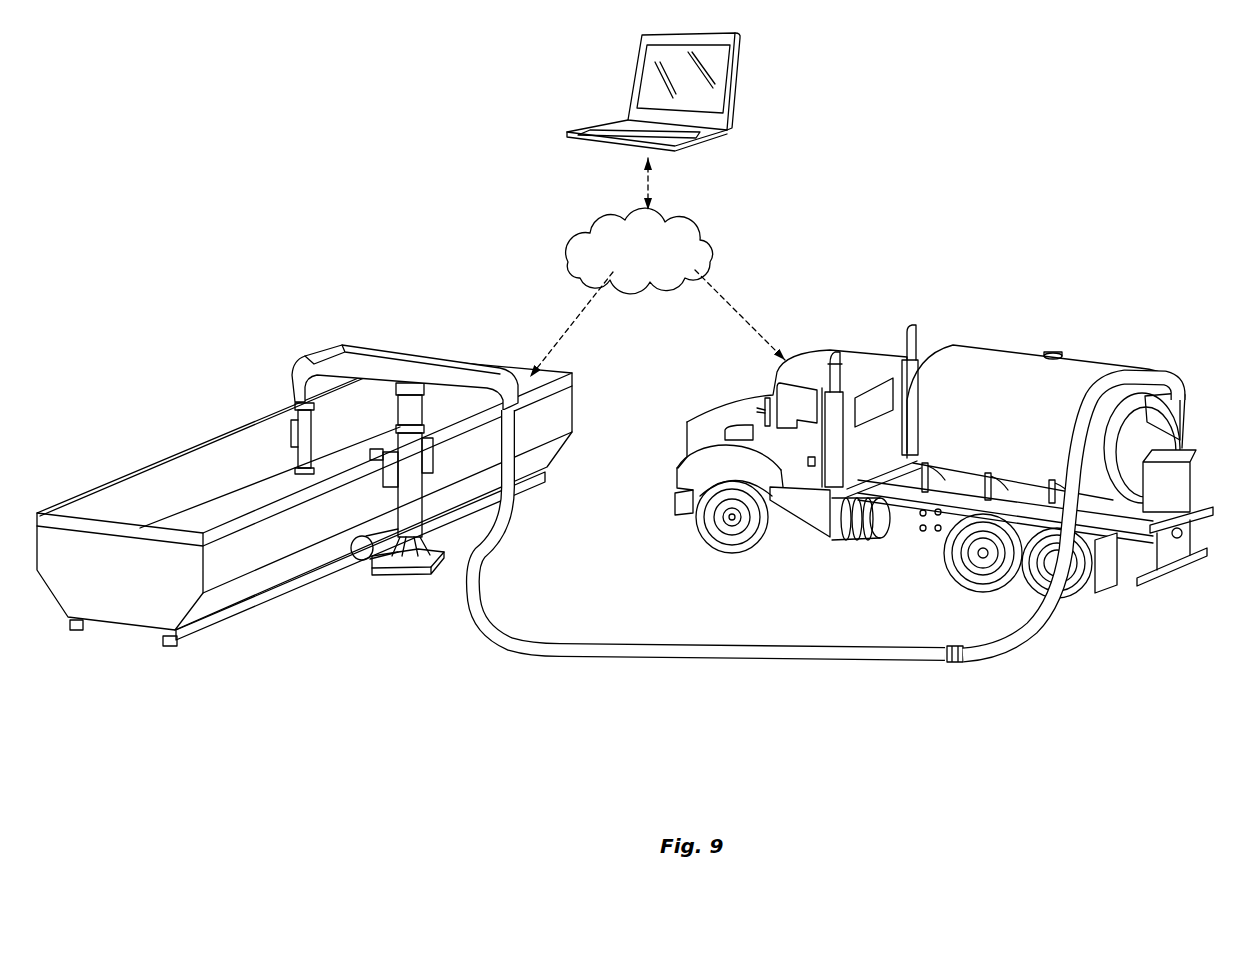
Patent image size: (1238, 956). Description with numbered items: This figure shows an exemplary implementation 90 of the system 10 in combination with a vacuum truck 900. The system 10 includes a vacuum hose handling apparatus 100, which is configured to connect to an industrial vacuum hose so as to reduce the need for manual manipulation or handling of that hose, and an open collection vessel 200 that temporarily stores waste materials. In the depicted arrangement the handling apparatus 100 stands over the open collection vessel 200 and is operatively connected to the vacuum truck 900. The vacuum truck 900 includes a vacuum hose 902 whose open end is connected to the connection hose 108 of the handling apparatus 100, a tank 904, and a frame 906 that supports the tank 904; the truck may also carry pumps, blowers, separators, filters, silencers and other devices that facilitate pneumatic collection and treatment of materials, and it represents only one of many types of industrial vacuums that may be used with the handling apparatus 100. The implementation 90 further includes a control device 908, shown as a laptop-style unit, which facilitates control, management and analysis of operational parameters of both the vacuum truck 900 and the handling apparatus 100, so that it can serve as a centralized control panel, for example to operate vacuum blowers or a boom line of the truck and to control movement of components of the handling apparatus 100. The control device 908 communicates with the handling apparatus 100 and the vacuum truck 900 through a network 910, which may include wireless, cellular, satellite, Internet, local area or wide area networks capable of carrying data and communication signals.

The system 10 is at (256, 293).
The implementation 90 is at (487, 220).
The vacuum hose handling apparatus 100 is at (462, 357).
The connection hose 108 is at (723, 652).
The open collection vessel 200 is at (127, 465).
The vacuum truck 900 is at (1082, 317).
The vacuum hose 902 is at (1022, 651).
The tank 904 is at (992, 350).
The frame 906 is at (910, 507).
The control device 908 is at (737, 70).
The network 910 is at (654, 269).